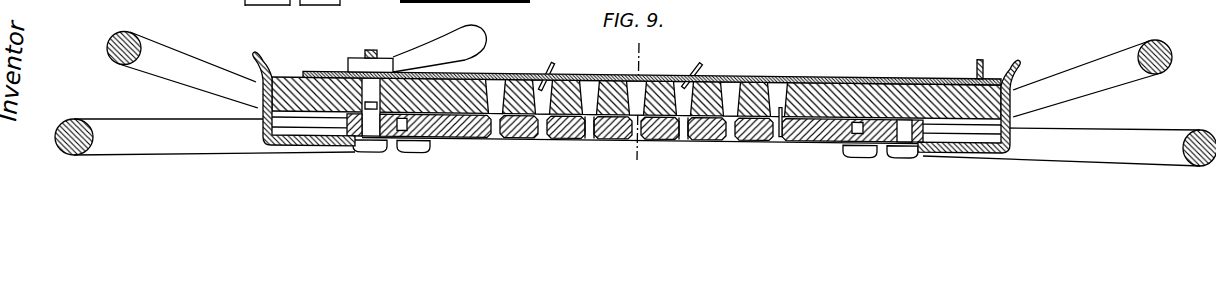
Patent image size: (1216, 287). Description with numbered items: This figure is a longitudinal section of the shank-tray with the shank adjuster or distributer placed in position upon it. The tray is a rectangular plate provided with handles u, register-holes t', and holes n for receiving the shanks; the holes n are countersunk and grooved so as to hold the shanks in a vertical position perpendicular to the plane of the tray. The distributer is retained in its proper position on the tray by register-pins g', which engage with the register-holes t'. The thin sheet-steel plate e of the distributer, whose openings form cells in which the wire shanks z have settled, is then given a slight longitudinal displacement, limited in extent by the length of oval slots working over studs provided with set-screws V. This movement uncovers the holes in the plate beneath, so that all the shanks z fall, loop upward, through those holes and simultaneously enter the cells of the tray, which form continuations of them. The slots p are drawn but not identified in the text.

The handles u is at (635, 99).
The set-screws V is at (417, 48).
The plate e is at (652, 71).
The register-holes t' is at (636, 111).
The register-pins g' is at (635, 161).
The upper slot p is at (732, 92).
The wire shanks z is at (779, 146).
The holes n is at (683, 138).